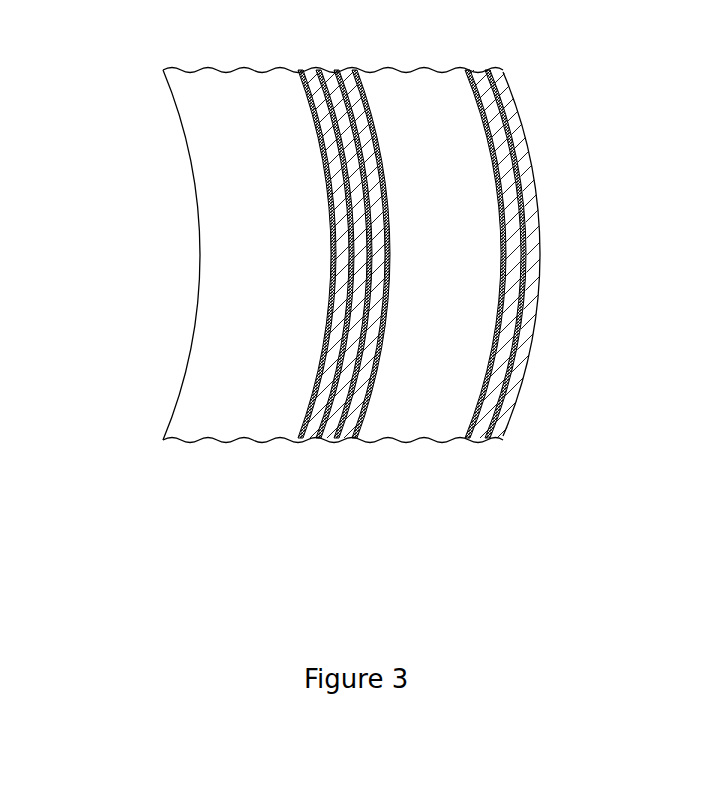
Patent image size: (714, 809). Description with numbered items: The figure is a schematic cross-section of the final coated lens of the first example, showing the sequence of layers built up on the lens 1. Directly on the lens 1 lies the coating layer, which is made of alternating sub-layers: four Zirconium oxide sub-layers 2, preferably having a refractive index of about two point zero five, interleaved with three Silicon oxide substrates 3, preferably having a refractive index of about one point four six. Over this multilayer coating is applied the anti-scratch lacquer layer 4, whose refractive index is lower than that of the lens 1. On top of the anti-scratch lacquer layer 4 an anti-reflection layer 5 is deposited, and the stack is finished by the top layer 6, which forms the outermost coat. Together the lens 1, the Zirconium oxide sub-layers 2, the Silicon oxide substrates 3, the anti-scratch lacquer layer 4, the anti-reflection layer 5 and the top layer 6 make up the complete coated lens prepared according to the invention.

The lens 1 is at (240, 203).
The Zirconium oxide sub-layers 2 is at (353, 442).
The Silicon oxide substrates 3 is at (342, 64).
The anti-scratch lacquer layer 4 is at (455, 203).
The anti-reflection layer 5 is at (463, 66).
The top layer 6 is at (508, 442).